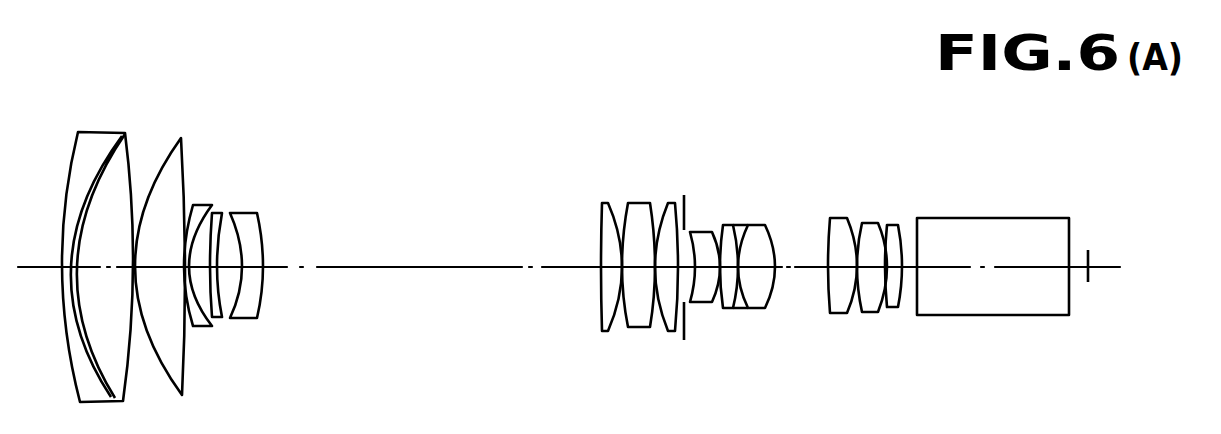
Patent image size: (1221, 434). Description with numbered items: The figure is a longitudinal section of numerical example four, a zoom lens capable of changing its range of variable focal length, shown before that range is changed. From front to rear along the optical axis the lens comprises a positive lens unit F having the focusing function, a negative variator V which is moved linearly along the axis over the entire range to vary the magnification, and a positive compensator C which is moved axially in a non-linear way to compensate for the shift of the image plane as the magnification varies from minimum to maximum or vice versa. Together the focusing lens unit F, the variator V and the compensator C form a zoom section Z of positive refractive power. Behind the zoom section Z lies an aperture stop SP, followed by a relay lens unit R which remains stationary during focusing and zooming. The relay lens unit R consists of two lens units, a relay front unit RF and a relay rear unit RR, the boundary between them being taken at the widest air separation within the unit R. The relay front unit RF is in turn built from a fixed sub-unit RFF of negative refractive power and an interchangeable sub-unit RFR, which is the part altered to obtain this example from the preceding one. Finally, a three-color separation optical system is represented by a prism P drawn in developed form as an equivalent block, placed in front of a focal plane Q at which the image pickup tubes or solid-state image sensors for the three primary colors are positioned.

The zoom section Z is at (52, 85).
The positive lens unit F is at (203, 130).
The negative variator V is at (273, 202).
The positive compensator C is at (678, 194).
The aperture stop SP is at (684, 340).
The relay lens unit R is at (903, 84).
The relay front unit RF is at (785, 141).
The fixed sub-unit RFF is at (724, 214).
The interchangeable sub-unit RFR is at (775, 214).
The relay rear unit RR is at (905, 217).
The prism P is at (1040, 218).
The focal plane Q is at (1088, 256).